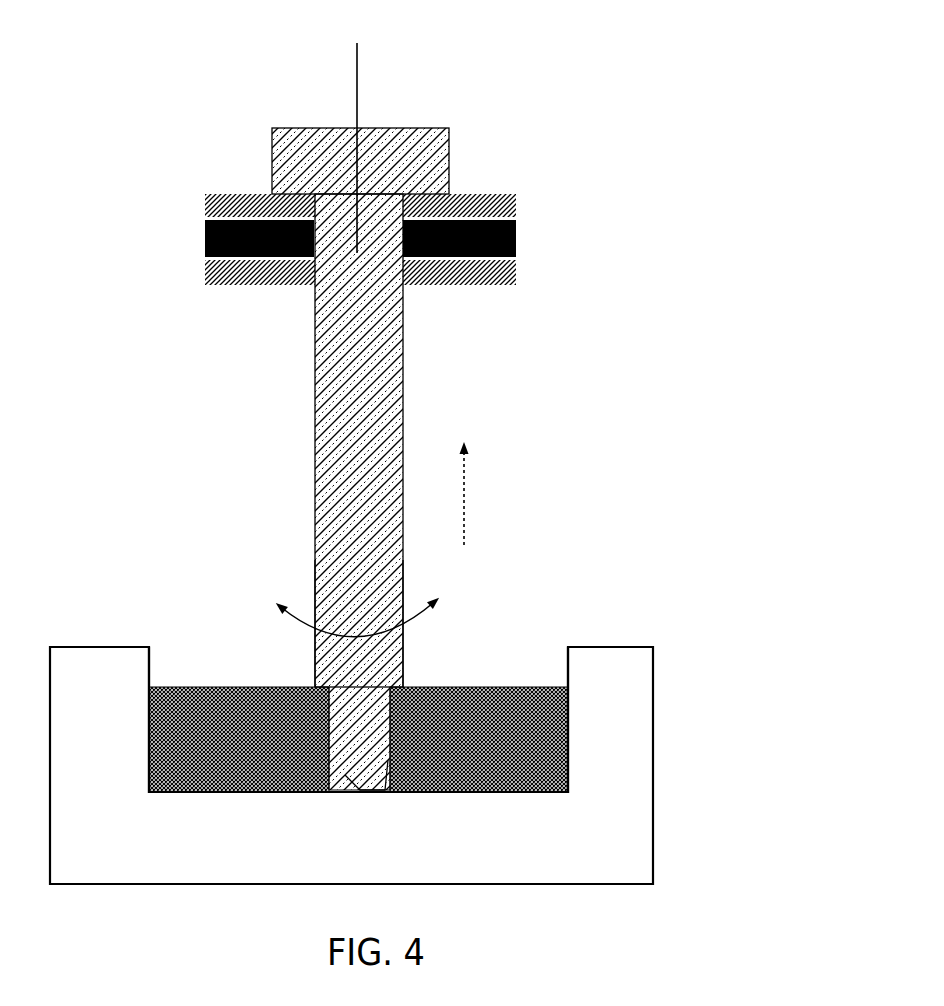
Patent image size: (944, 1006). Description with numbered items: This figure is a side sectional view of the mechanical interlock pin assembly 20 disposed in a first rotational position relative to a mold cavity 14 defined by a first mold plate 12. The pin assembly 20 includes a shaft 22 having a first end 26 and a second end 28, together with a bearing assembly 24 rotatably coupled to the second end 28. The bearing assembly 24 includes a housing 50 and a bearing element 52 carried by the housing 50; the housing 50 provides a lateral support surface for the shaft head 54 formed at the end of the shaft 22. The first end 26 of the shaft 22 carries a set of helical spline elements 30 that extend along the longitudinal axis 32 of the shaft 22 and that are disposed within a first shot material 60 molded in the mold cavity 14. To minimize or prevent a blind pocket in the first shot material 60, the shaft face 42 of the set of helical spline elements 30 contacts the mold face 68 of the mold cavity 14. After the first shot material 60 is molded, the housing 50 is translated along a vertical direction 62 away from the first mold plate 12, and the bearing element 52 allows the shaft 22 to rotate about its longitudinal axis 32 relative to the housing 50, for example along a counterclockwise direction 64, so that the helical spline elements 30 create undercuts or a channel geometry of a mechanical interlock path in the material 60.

The first mold plate 12 is at (642, 718).
The mold cavity 14 is at (522, 640).
The mechanical interlock pin assembly 20 is at (368, 402).
The shaft 22 is at (403, 355).
The bearing assembly 24 is at (535, 202).
The first end 26 is at (247, 561).
The second end 28 is at (368, 181).
The set of helical spline elements 30 is at (320, 803).
The longitudinal axis 32 is at (357, 77).
The shaft face 42 is at (368, 774).
The housing 50 is at (205, 202).
The bearing element 52 is at (203, 242).
The shaft head 54 is at (407, 130).
The first shot material 60 is at (213, 687).
The vertical direction 62 is at (467, 510).
The counterclockwise direction 64 is at (307, 620).
The mold face 68 is at (177, 792).